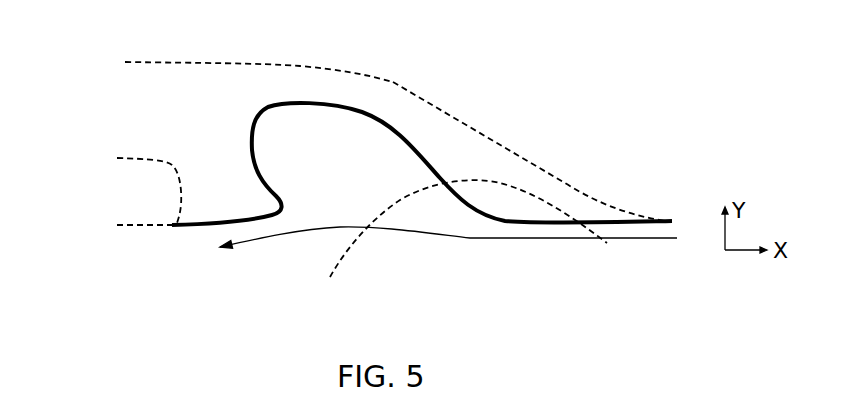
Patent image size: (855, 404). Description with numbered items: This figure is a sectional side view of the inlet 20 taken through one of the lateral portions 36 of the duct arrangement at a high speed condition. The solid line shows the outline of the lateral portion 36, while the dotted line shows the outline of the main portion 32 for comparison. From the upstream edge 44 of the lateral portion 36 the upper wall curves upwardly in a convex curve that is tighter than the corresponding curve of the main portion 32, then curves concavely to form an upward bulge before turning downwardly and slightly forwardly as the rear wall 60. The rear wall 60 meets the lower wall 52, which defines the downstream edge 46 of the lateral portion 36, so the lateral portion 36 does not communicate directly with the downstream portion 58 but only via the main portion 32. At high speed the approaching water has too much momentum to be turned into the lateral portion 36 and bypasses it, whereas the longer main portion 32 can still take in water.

The downstream portion 58 is at (132, 100).
The rear wall 60 is at (253, 147).
The main portion 32 is at (513, 160).
The lateral portion 36 is at (397, 167).
The downstream edge 46 is at (280, 217).
The lower wall 52 is at (197, 228).
The inlet 20 is at (367, 232).
The upstream edge 44 is at (477, 213).